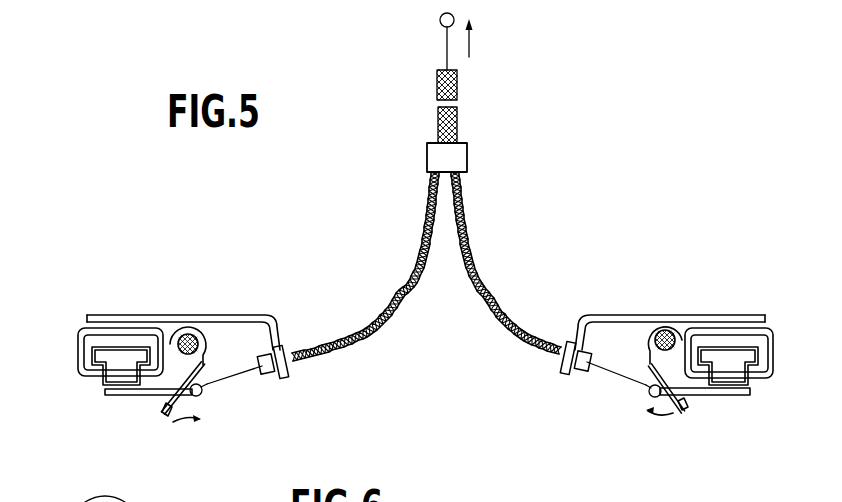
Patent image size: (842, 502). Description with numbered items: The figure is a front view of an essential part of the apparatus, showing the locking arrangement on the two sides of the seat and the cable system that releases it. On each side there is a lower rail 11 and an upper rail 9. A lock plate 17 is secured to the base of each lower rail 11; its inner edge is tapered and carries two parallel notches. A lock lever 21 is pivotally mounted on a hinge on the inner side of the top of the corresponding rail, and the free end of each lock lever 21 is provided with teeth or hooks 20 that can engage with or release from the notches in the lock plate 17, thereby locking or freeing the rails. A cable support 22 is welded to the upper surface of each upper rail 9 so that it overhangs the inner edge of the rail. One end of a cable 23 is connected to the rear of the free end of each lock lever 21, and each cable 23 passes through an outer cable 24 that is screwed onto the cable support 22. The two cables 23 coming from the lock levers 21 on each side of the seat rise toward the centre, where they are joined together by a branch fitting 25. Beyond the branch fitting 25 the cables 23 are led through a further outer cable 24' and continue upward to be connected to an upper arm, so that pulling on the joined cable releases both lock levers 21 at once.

The upper rail 9 is at (77, 340).
The lower rail 11 is at (98, 387).
The lock plate 17 is at (127, 395).
The teeth or hooks 20 is at (166, 409).
The lock lever 21 is at (204, 368).
The cable support 22 is at (240, 316).
The cable 23 is at (446, 52).
The outer cable 24 is at (424, 275).
The outer cable 24' is at (509, 86).
The branch fitting 25 is at (468, 162).